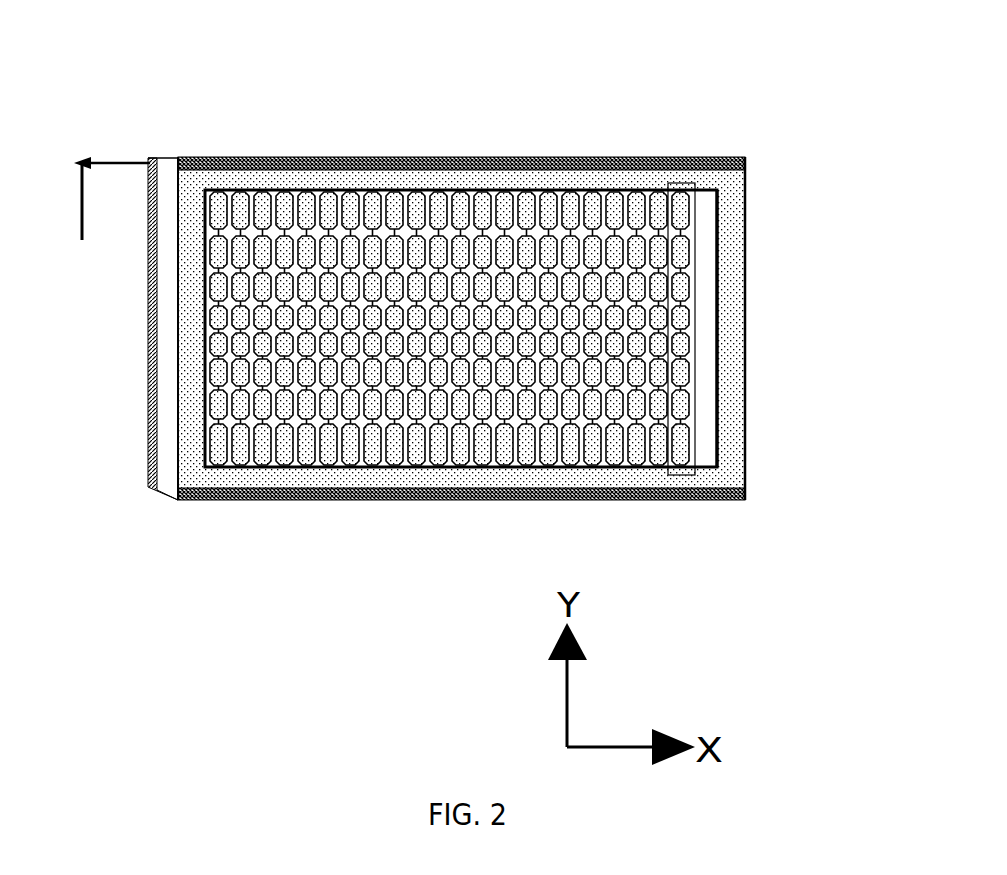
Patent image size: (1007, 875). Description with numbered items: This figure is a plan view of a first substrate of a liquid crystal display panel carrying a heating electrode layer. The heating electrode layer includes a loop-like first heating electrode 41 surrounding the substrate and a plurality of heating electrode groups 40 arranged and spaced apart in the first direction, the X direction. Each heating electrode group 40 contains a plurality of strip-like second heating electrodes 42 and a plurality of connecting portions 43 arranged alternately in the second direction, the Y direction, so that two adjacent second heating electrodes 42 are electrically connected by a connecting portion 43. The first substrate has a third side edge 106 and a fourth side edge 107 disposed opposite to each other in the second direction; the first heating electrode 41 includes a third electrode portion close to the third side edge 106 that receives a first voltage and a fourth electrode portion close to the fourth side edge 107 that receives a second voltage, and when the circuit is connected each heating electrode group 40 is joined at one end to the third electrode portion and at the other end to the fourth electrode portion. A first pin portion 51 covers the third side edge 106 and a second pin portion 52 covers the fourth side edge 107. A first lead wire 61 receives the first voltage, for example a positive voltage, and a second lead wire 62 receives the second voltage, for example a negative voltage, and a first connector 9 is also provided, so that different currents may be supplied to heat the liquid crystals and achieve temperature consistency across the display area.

The first connector 9 is at (112, 216).
The heating electrode group 40 is at (695, 473).
The first heating electrode 41 is at (208, 186).
The second heating electrode 42 is at (703, 208).
The connecting portion 43 is at (700, 272).
The first pin portion 51 is at (426, 167).
The second pin portion 52 is at (358, 497).
The first lead wire 61 is at (167, 160).
The second lead wire 62 is at (152, 306).
The third side edge 106 is at (328, 161).
The fourth side edge 107 is at (423, 498).